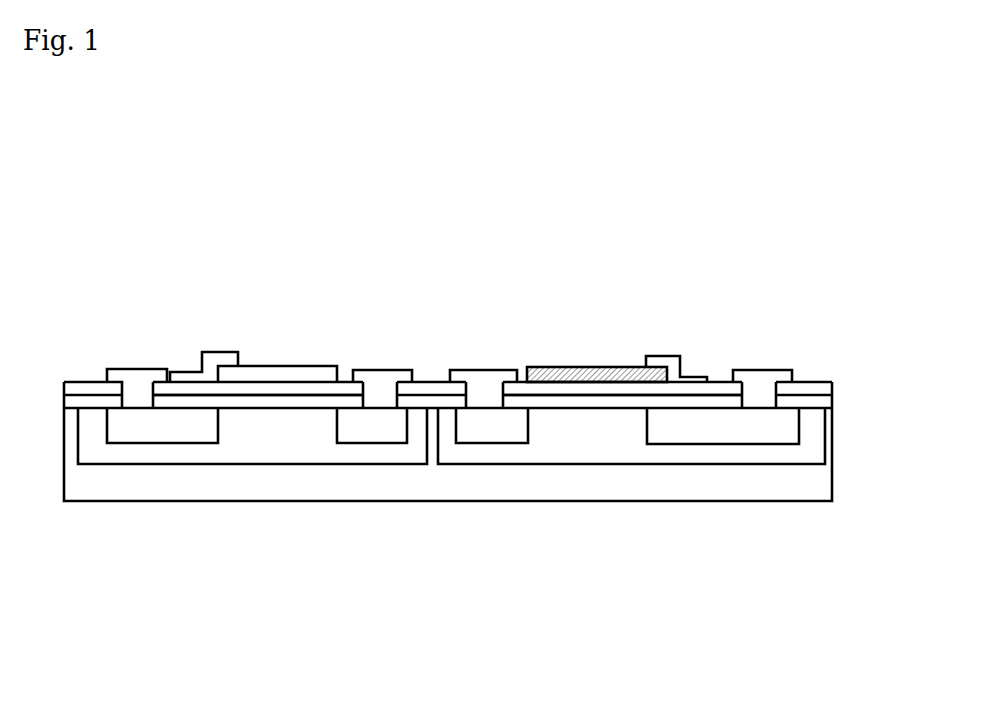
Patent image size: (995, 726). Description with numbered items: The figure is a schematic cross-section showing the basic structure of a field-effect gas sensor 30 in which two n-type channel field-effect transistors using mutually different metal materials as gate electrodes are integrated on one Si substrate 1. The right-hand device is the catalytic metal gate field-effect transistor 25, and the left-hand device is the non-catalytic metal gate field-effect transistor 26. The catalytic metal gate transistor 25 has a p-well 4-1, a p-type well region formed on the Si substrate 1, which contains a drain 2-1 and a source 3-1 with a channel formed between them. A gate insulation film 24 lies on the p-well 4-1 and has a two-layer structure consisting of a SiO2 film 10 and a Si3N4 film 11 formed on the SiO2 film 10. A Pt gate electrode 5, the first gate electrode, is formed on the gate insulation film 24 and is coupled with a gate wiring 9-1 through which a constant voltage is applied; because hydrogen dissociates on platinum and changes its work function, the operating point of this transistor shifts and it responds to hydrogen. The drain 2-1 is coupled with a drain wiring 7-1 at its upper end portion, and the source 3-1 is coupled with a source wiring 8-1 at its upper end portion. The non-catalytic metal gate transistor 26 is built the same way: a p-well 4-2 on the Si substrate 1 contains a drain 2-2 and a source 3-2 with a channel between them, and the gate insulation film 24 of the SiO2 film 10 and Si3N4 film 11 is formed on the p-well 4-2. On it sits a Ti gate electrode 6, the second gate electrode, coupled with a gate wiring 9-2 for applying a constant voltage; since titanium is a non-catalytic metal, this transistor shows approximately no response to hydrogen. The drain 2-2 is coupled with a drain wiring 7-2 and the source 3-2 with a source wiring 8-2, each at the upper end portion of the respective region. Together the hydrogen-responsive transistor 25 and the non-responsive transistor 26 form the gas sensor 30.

The Si substrate 1 is at (433, 488).
The drain 2-1 is at (712, 430).
The drain 2-2 is at (355, 437).
The source 3-1 is at (472, 435).
The source 3-2 is at (163, 437).
The p-well 4-1 is at (627, 450).
The p-well 4-2 is at (270, 447).
The Pt gate electrode 5 is at (567, 372).
The Ti gate electrode 6 is at (257, 372).
The drain wiring 7-1 is at (783, 377).
The drain wiring 7-2 is at (373, 377).
The source wiring 8-1 is at (497, 378).
The source wiring 8-2 is at (141, 383).
The gate wiring 9-1 is at (665, 362).
The gate wiring 9-2 is at (212, 362).
The SiO2 film 10 is at (293, 403).
The Si3N4 film 11 is at (277, 390).
The gate insulation film 24 is at (408, 272).
The catalytic metal gate field-effect transistor 25 is at (827, 595).
The non-catalytic metal gate field-effect transistor 26 is at (427, 595).
The gas sensor 30 is at (502, 203).